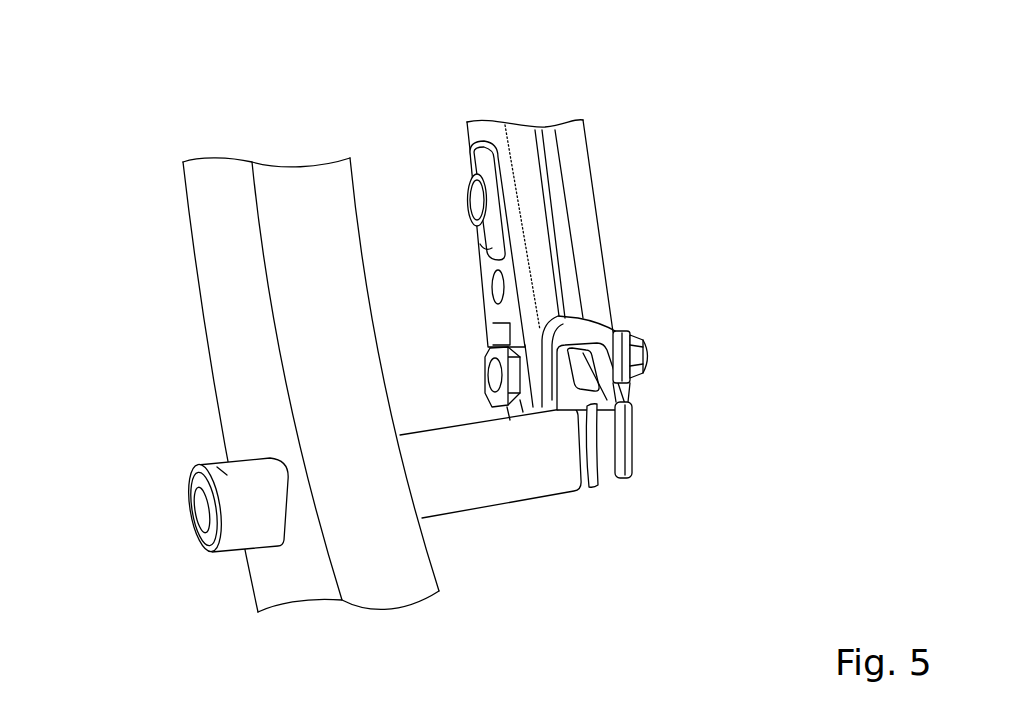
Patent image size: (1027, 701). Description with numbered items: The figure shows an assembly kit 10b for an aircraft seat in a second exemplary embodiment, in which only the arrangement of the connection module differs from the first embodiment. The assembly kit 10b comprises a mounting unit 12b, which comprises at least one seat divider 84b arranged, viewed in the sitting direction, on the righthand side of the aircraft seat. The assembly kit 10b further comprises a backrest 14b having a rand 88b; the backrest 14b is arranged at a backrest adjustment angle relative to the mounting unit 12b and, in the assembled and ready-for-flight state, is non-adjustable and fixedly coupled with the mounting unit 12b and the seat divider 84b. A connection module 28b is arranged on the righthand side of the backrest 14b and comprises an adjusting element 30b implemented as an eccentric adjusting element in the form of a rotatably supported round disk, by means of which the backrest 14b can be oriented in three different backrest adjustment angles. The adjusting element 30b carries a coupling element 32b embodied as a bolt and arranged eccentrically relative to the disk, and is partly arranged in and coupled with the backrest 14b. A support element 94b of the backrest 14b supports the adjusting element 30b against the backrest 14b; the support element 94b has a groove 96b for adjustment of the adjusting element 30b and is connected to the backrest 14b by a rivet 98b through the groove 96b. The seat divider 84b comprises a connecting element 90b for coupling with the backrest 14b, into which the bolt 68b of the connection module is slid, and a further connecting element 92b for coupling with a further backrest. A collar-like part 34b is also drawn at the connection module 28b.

The assembly kit 10b is at (138, 180).
The mounting unit 12b is at (268, 158).
The backrest 14b is at (575, 177).
The connection module 28b is at (652, 398).
The adjusting element 30b is at (656, 348).
The coupling element 32b is at (507, 408).
The clamp collar 34b is at (603, 445).
The bolt 68b is at (632, 447).
The seat divider 84b is at (238, 328).
The rand 88b is at (559, 336).
The connecting element 90b is at (477, 472).
The further connecting element 92b is at (203, 462).
The support element 94b is at (477, 164).
The groove 96b is at (485, 240).
The rivet 98b is at (470, 198).